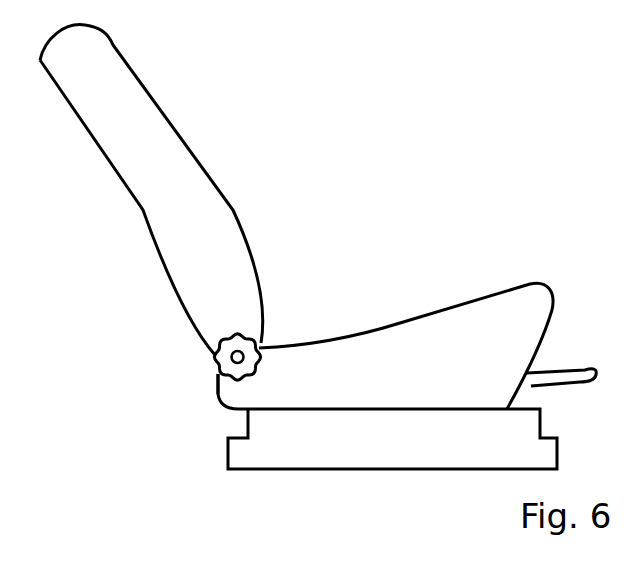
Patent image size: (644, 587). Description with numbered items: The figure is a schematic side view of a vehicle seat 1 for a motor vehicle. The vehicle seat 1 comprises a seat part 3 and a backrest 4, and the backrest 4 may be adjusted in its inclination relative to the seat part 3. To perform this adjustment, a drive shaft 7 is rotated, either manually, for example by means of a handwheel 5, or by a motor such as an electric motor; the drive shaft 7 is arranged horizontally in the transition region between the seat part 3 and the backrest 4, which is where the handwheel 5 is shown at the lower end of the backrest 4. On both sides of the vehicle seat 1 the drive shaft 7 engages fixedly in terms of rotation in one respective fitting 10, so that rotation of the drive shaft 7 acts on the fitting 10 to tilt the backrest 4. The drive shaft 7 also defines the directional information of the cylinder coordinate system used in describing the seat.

The vehicle seat 1 is at (277, 153).
The seat part 3 is at (417, 332).
The backrest 4 is at (137, 122).
The handwheel 5 is at (263, 347).
The drive shaft 7 is at (237, 358).
The fitting 10 is at (213, 363).